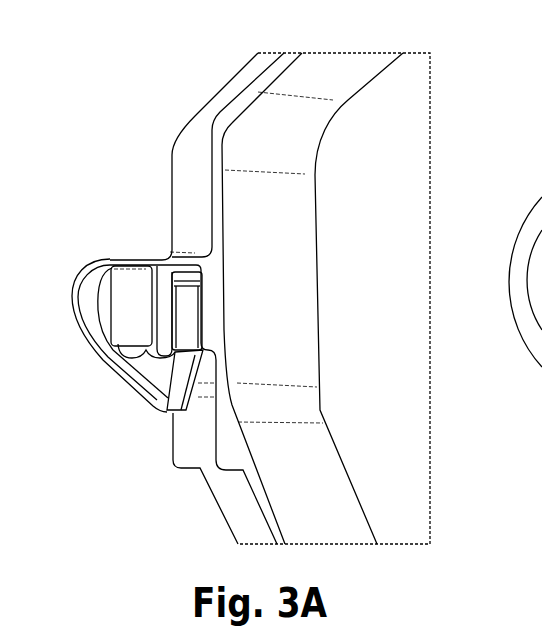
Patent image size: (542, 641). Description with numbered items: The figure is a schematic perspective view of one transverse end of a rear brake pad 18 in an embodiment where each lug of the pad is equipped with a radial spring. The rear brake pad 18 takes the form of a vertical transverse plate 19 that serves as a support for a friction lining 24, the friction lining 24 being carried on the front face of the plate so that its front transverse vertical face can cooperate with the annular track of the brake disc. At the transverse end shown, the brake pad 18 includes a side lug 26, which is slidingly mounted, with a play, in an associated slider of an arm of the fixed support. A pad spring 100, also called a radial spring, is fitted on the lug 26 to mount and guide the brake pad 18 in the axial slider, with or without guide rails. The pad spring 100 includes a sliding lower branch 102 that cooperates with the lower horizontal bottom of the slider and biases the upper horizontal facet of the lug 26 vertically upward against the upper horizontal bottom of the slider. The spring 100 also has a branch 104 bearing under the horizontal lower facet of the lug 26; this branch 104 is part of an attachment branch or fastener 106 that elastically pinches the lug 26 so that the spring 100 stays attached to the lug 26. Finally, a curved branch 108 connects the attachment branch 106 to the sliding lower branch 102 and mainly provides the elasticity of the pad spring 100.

The rear brake pad 18 is at (360, 40).
The vertical transverse plate 19 is at (197, 138).
The friction lining 24 is at (359, 298).
The side lug 26 is at (134, 300).
The pad spring 100 is at (119, 389).
The sliding lower branch 102 is at (165, 413).
The branch 104 is at (114, 357).
The attachment branch 106 is at (185, 317).
The curved branch 108 is at (90, 297).